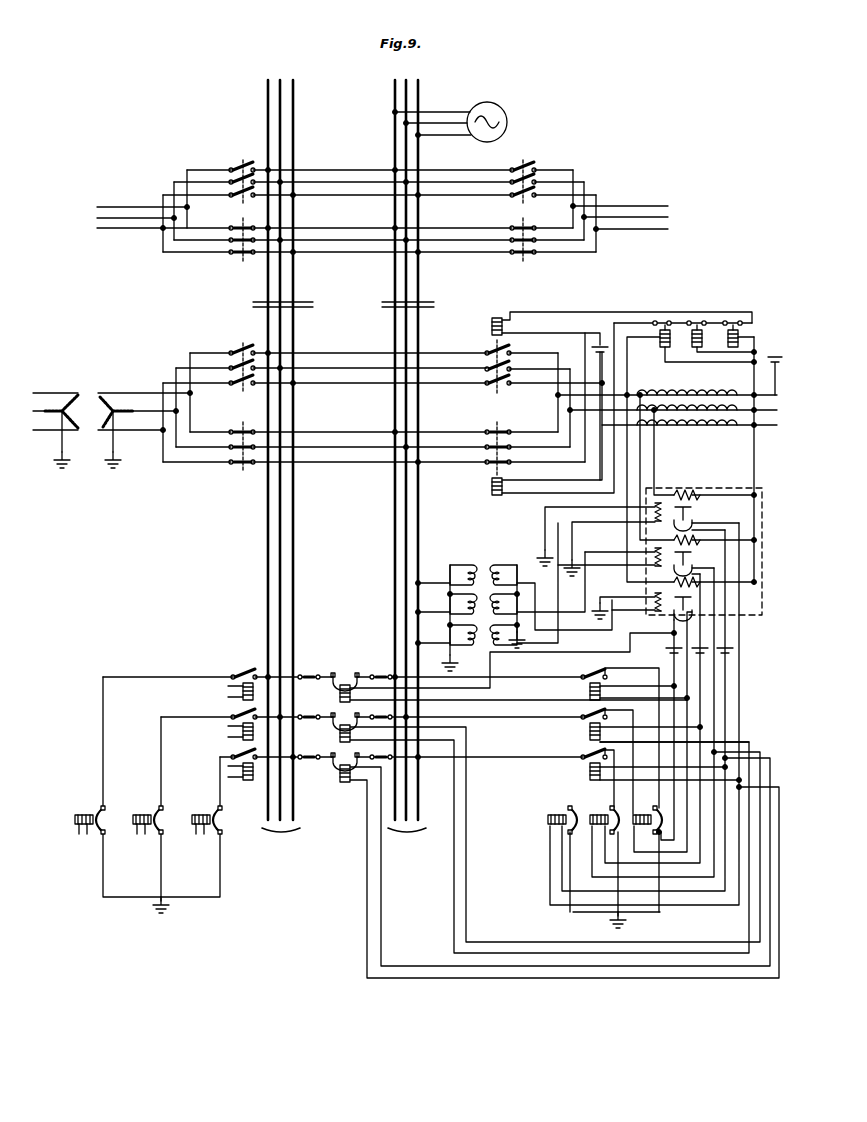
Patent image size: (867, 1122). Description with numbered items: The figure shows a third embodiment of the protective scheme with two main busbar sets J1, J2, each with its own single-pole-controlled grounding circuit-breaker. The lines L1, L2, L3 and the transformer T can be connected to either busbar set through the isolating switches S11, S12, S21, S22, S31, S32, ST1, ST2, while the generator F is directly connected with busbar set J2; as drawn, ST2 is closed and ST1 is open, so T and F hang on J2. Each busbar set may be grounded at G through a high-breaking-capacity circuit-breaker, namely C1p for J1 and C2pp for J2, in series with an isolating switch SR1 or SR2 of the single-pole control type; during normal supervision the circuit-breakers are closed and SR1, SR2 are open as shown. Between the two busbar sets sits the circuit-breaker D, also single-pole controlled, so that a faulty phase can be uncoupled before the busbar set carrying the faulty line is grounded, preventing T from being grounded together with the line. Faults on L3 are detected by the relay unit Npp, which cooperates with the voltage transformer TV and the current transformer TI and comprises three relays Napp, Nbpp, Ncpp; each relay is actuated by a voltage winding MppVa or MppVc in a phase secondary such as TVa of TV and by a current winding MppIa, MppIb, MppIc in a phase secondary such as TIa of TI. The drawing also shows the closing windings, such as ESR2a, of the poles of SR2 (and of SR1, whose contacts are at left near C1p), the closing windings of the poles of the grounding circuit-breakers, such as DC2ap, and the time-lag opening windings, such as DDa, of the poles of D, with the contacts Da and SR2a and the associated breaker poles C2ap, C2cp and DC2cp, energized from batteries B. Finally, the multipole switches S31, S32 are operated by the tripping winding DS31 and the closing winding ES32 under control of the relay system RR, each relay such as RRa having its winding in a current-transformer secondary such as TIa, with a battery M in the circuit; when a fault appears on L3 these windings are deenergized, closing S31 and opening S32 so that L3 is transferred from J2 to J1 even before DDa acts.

The first main busbar set J1 is at (283, 459).
The second main busbar set J2 is at (408, 460).
The generator F is at (456, 122).
The first line L1 is at (152, 211).
The second line L2 is at (629, 211).
The third feeder line L3 is at (780, 402).
The isolating switch S11 is at (370, 175).
The isolating switch S12 is at (370, 235).
The isolating switch S21 is at (553, 175).
The isolating switch S22 is at (553, 236).
The isolating switch S31 is at (544, 393).
The isolating switch S32 is at (535, 404).
The transformer T is at (112, 413).
The ground G is at (347, 697).
The transformer isolating switch ST1 is at (325, 395).
The transformer isolating switch ST2 is at (325, 440).
The opening winding DS31 is at (604, 396).
The closing winding ES32 is at (535, 412).
The relay system RR is at (693, 449).
The relay RRa is at (644, 345).
The battery M is at (779, 376).
The current transformer phase TIa is at (700, 392).
The current transformer TI is at (673, 426).
The relay unit Npp is at (704, 543).
The current winding MppIc is at (680, 485).
The relay Ncpp is at (697, 516).
The voltage winding MppVc is at (645, 508).
The current winding MppIb is at (698, 470).
The relay Nbpp is at (638, 562).
The current winding MppIa is at (668, 587).
The relay Napp is at (685, 606).
The voltage winding MppVa is at (652, 600).
The voltage transformer TV is at (514, 597).
The voltage transformer phase TVa is at (470, 575).
The isolating switch SR1 is at (199, 775).
The circuit-breaker C1p is at (137, 820).
The circuit-breaker D is at (438, 711).
The relay contact Da is at (324, 676).
The opening winding DDa is at (539, 804).
The selector relay contact SR2a is at (615, 729).
The closing winding ESR2a is at (620, 692).
The isolating switch SR2 is at (651, 761).
The batteries B is at (644, 714).
The circuit-breaker C2pp is at (592, 859).
The trip coil DC'2c DC2cp is at (572, 808).
The circuit breaker C'2c C2cp is at (598, 816).
The closing winding DC2ap is at (642, 857).
The circuit breaker C'2a C2ap is at (660, 808).